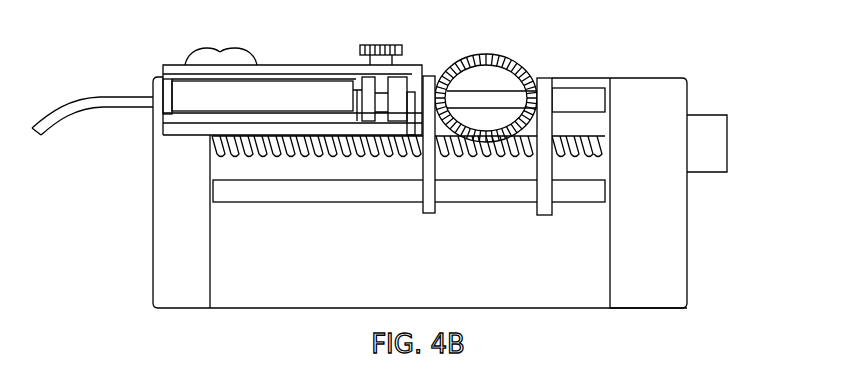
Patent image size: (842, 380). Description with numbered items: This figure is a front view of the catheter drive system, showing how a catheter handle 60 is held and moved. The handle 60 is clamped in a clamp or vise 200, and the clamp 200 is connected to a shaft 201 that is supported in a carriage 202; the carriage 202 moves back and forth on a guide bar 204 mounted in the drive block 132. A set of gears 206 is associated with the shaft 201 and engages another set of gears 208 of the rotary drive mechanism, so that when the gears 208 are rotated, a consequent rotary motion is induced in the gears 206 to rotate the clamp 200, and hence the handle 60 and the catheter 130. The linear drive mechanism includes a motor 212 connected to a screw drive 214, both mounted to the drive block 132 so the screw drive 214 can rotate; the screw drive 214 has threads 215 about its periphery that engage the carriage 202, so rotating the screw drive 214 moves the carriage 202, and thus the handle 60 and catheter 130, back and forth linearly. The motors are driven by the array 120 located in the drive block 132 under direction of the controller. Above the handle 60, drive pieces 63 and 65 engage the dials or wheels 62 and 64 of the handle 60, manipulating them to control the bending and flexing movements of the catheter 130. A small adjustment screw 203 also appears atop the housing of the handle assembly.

The handle 60 is at (218, 106).
The dial or wheel 62 is at (152, 78).
The drive piece 63 is at (204, 48).
The dial or wheel 64 is at (243, 79).
The drive piece 65 is at (238, 49).
The catheter 130 is at (68, 116).
The clamp or vise 200 is at (186, 147).
The shaft 201 is at (517, 95).
The carriage 202 is at (544, 219).
The adjustment screw 203 is at (376, 43).
The guide bar 204 is at (371, 203).
The set of gears 206 is at (437, 75).
The set of gears 208 is at (507, 62).
The motor 212 is at (720, 115).
The screw drive 214 is at (603, 137).
The threads 215 is at (280, 158).
The array 120 is at (669, 193).
The drive block 132 is at (688, 236).